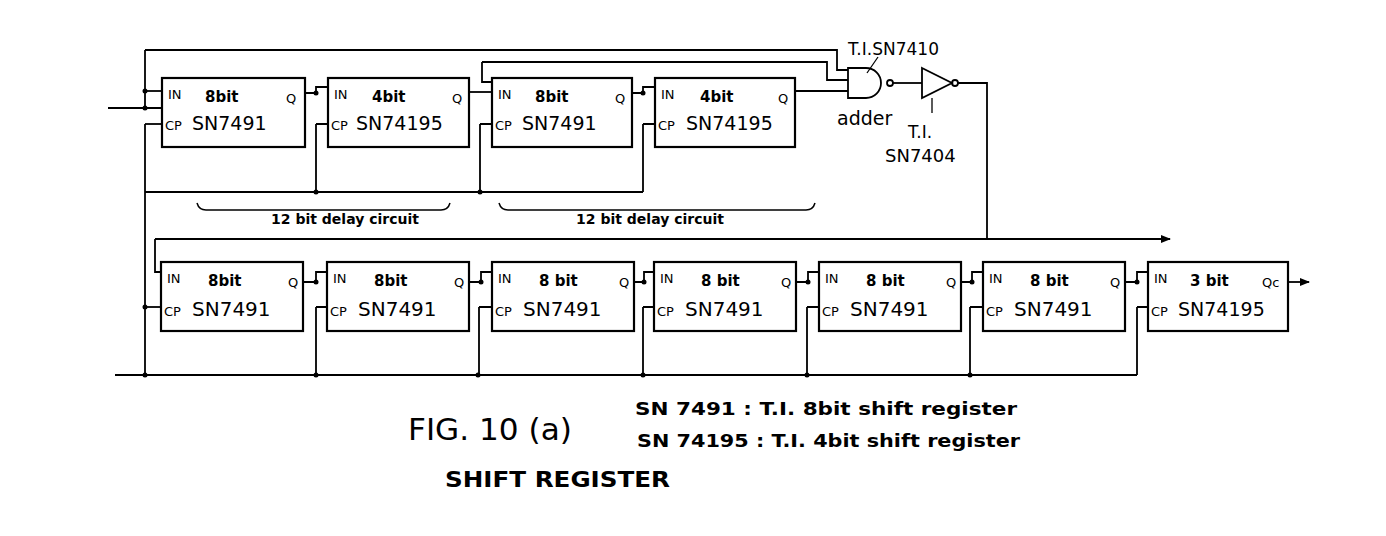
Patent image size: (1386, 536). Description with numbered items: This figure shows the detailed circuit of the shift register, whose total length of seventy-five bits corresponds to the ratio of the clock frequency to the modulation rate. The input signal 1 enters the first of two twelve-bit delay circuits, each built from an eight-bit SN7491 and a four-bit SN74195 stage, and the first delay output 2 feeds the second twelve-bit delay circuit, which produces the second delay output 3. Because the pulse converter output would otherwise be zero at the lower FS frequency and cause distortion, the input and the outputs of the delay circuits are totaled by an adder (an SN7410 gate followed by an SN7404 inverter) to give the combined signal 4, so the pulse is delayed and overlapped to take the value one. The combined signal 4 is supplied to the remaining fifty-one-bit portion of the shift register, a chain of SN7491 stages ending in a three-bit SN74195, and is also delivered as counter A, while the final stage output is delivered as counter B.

The input signal 1 is at (114, 100).
The output of first 12 bit delay circuit 2 is at (480, 104).
The output of second 12 bit delay circuit 3 is at (821, 105).
The adder (inverted) output signal 4 is at (972, 150).
The counter A output A is at (731, 239).
The counter B output B is at (1329, 307).